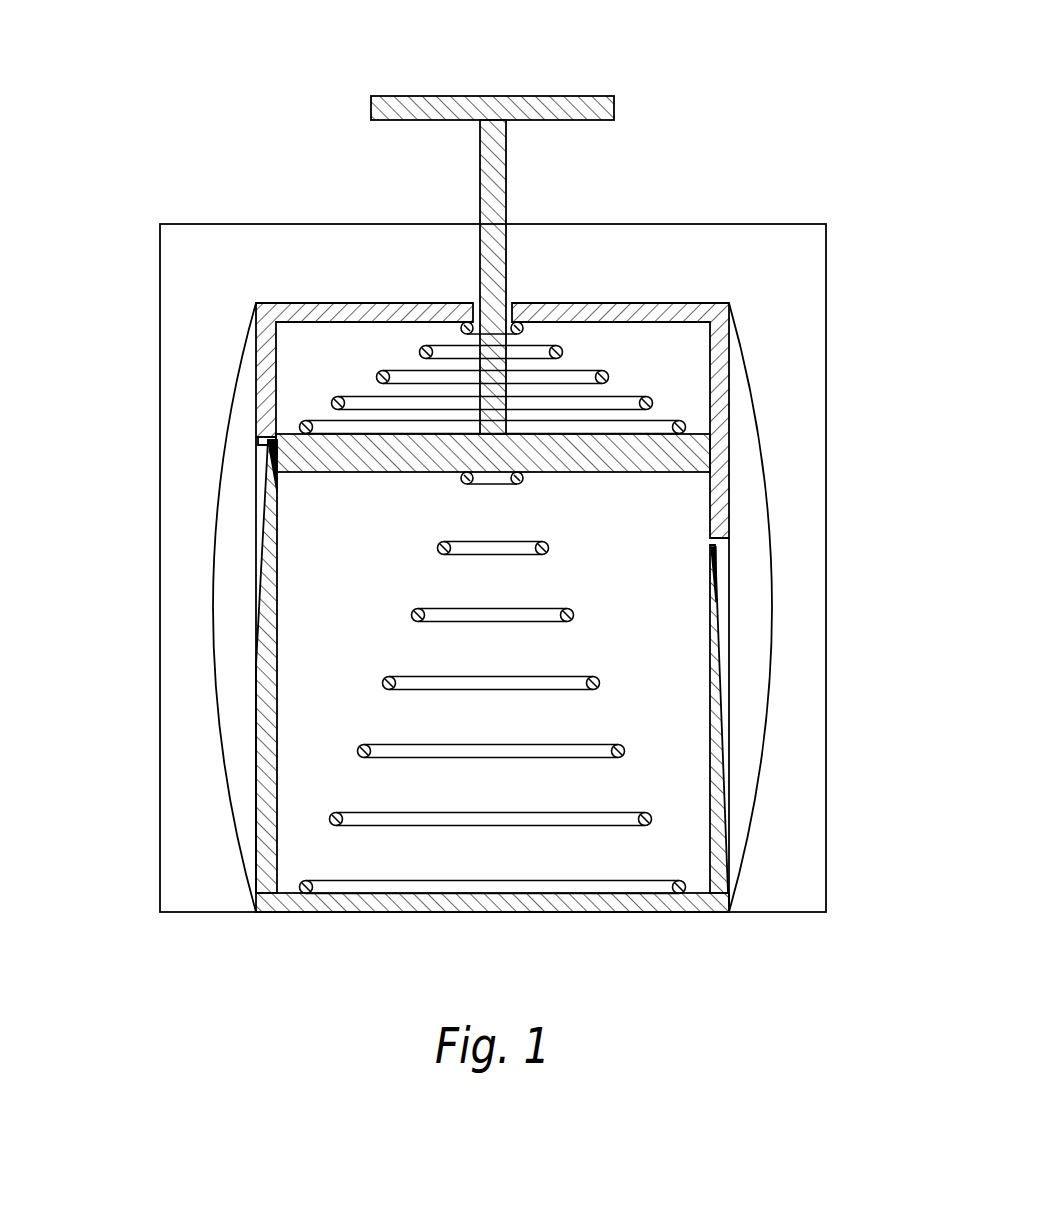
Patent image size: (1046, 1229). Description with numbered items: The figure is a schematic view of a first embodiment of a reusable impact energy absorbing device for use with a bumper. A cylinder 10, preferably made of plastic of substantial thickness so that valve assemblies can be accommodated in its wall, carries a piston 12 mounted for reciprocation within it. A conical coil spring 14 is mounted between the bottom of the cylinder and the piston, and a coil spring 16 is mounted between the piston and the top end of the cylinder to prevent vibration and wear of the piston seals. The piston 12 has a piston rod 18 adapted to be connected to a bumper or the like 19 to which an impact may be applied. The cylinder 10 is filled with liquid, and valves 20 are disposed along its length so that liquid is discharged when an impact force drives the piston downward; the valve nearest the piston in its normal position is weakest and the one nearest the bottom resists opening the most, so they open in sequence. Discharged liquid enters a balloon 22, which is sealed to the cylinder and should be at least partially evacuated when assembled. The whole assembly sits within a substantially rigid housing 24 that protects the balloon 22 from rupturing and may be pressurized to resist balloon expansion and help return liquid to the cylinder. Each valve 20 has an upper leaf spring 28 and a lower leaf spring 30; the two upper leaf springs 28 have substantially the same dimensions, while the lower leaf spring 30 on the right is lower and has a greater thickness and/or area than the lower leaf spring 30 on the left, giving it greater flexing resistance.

The cylinder 10 is at (721, 377).
The piston 12 is at (625, 462).
The conical coil spring 14 is at (540, 611).
The coil spring 16 is at (583, 375).
The piston rod 18 is at (482, 172).
The bumper or the like 19 is at (568, 96).
The valve 20 is at (252, 473).
The balloon 22 is at (770, 490).
The housing 24 is at (827, 273).
The upper leaf spring 28 is at (262, 448).
The lower leaf spring 30 is at (262, 717).